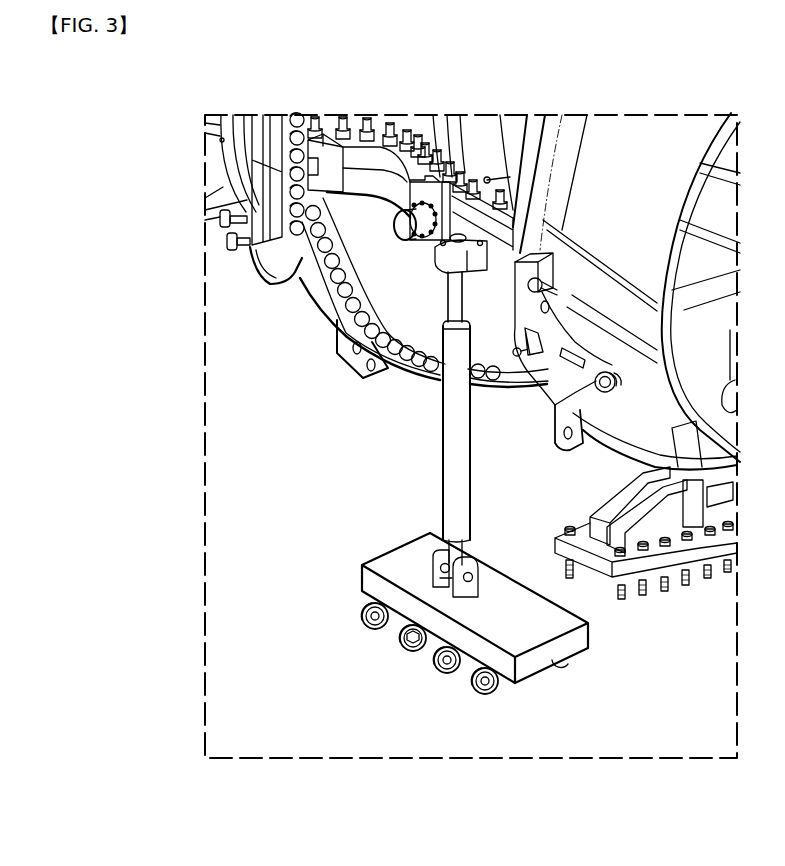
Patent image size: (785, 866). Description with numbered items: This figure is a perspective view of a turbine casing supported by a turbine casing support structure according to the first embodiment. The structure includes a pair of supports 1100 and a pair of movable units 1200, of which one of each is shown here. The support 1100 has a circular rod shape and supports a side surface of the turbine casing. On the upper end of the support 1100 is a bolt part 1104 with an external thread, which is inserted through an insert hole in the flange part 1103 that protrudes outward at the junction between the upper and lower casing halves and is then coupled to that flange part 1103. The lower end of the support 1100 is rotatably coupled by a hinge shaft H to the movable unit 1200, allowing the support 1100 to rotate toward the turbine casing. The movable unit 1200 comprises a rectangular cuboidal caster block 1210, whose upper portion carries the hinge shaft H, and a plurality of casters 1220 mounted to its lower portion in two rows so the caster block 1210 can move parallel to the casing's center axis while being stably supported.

The support 1100 is at (458, 457).
The flange part 1103 is at (443, 256).
The bolt part 1104 is at (457, 297).
The hinge shaft H is at (450, 578).
The movable unit 1200 is at (474, 692).
The caster block 1210 is at (541, 673).
The caster 1220 is at (432, 688).